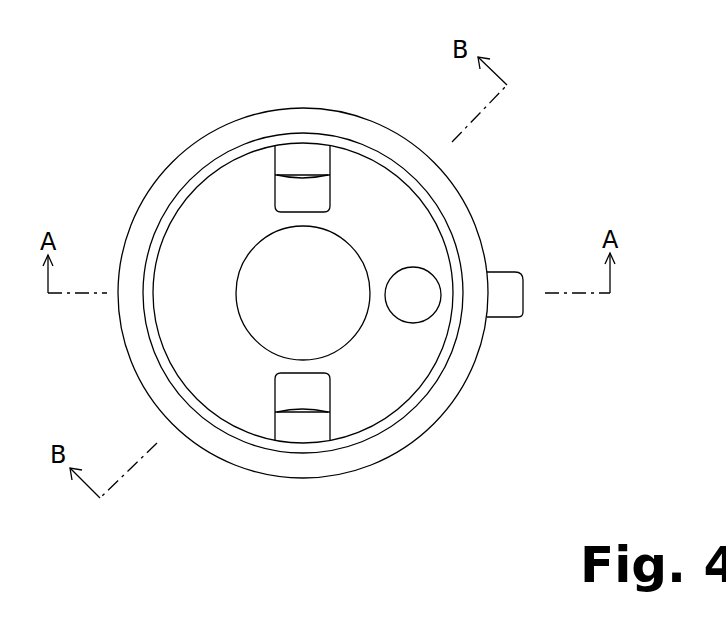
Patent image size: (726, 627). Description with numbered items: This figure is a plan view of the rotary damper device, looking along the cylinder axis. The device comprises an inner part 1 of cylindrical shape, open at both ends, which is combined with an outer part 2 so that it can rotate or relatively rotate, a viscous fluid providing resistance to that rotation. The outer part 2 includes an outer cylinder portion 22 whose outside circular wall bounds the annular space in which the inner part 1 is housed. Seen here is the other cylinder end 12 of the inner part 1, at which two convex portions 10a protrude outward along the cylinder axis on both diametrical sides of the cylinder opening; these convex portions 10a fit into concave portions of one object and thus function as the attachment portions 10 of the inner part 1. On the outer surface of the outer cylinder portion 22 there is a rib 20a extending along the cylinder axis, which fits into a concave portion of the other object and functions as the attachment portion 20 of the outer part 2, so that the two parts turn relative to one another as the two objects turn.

The inner part 1 is at (222, 203).
The outer part 2 is at (122, 316).
The outer cylinder portion 22 is at (134, 372).
The attachment portion 10 is at (303, 287).
The convex portion 10a is at (308, 158).
The other cylinder end 12 is at (395, 217).
The attachment portion 20 is at (556, 333).
The rib 20a is at (508, 303).